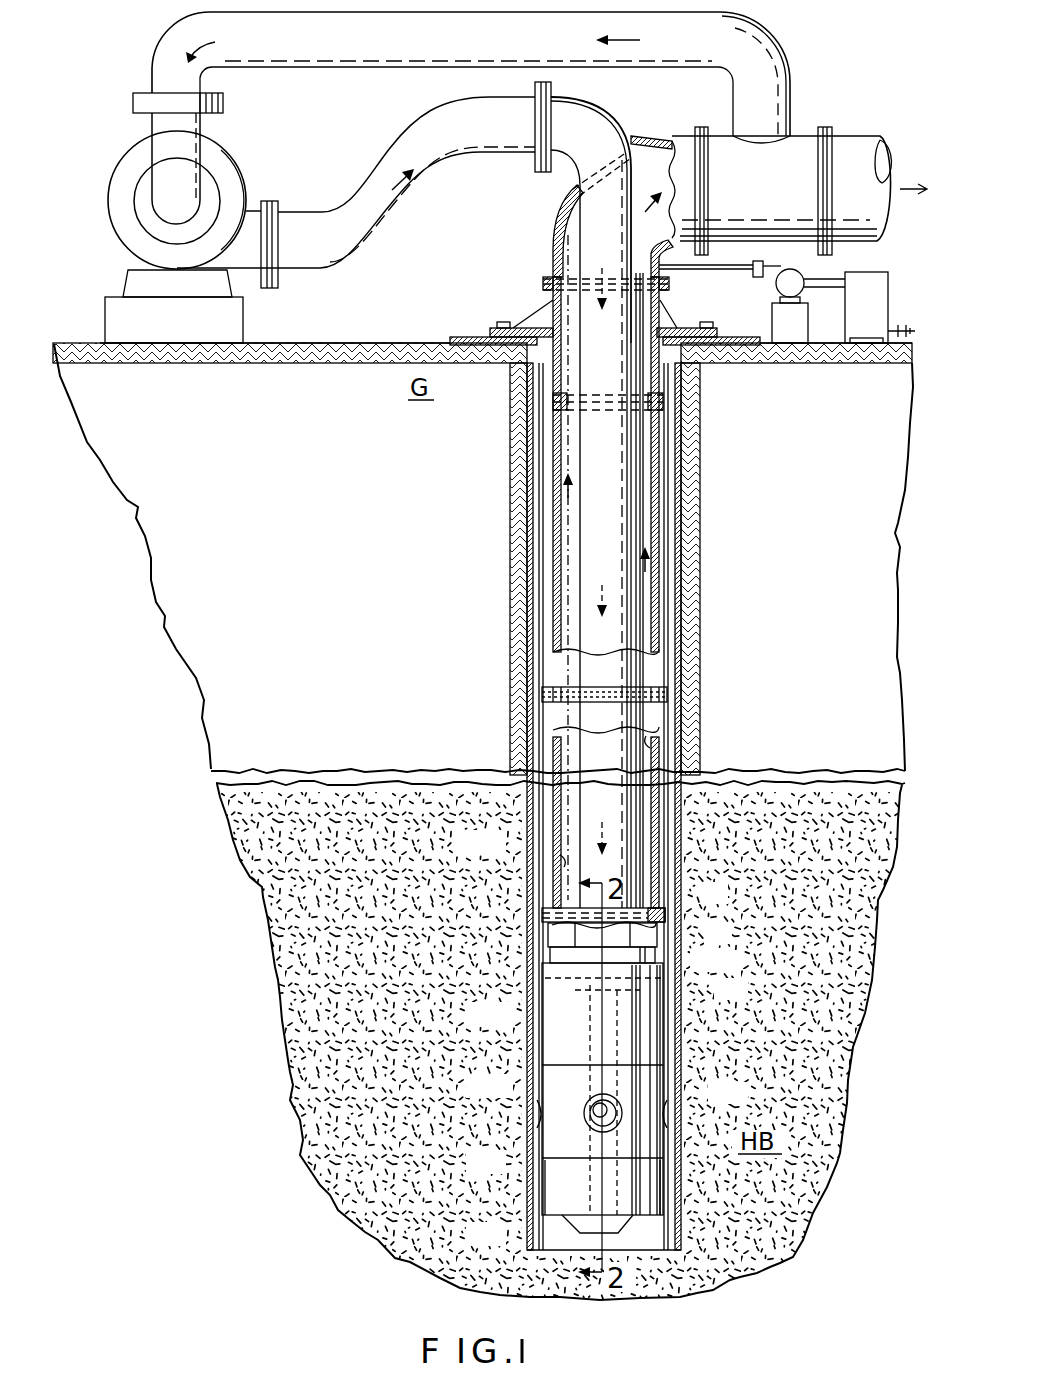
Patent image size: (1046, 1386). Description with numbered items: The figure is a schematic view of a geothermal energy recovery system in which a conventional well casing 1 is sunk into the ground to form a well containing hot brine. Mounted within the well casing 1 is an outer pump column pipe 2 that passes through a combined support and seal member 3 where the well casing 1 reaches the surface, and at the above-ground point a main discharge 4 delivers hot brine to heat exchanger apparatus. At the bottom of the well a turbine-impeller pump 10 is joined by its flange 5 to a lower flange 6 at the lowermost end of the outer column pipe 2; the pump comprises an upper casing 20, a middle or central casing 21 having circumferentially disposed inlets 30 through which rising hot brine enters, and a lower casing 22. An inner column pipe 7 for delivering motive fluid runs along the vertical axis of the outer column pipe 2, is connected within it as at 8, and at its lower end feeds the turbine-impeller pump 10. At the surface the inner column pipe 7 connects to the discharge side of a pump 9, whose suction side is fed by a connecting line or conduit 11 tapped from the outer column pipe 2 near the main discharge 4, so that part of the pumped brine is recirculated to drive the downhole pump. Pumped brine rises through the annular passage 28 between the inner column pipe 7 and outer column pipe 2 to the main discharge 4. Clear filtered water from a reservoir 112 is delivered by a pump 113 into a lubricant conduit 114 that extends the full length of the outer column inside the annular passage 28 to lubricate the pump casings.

The well casing 1 is at (682, 557).
The outer pump column pipe 2 is at (660, 600).
The combined support and seal member 3 is at (665, 340).
The main discharge 4 is at (892, 152).
The flange 5 is at (662, 927).
The lower flange 6 is at (656, 912).
The inner column pipe 7 is at (620, 510).
The connection means 8 is at (632, 150).
The pump 9 is at (241, 168).
The turbine-impeller pump 10 is at (670, 1019).
The connecting line or conduit 11 is at (337, 58).
The upper casing 20 is at (566, 1040).
The middle or central casing 21 is at (565, 1143).
The lower casing 22 is at (560, 1187).
The annular passage 28 is at (650, 748).
The inlets 30 is at (527, 1110).
The reservoir 112 is at (878, 295).
The pump 113 is at (797, 275).
The lubricant conduit 114 is at (650, 440).